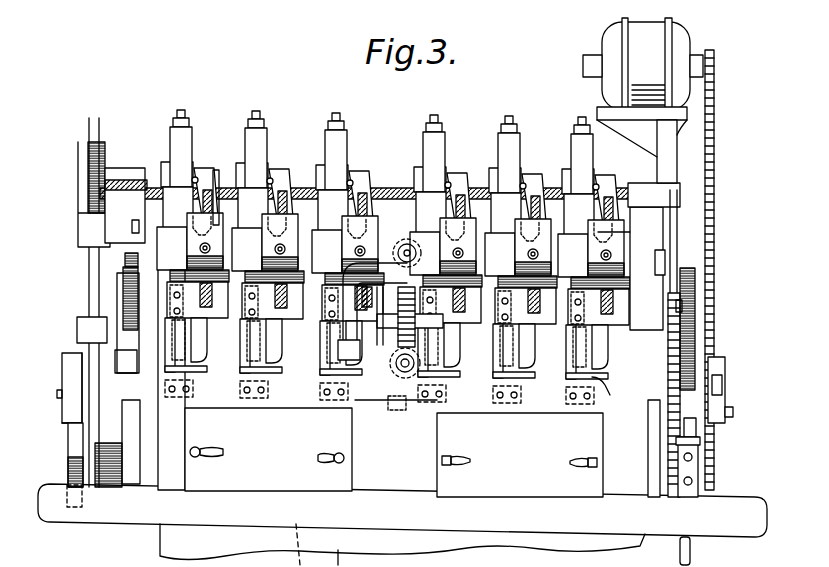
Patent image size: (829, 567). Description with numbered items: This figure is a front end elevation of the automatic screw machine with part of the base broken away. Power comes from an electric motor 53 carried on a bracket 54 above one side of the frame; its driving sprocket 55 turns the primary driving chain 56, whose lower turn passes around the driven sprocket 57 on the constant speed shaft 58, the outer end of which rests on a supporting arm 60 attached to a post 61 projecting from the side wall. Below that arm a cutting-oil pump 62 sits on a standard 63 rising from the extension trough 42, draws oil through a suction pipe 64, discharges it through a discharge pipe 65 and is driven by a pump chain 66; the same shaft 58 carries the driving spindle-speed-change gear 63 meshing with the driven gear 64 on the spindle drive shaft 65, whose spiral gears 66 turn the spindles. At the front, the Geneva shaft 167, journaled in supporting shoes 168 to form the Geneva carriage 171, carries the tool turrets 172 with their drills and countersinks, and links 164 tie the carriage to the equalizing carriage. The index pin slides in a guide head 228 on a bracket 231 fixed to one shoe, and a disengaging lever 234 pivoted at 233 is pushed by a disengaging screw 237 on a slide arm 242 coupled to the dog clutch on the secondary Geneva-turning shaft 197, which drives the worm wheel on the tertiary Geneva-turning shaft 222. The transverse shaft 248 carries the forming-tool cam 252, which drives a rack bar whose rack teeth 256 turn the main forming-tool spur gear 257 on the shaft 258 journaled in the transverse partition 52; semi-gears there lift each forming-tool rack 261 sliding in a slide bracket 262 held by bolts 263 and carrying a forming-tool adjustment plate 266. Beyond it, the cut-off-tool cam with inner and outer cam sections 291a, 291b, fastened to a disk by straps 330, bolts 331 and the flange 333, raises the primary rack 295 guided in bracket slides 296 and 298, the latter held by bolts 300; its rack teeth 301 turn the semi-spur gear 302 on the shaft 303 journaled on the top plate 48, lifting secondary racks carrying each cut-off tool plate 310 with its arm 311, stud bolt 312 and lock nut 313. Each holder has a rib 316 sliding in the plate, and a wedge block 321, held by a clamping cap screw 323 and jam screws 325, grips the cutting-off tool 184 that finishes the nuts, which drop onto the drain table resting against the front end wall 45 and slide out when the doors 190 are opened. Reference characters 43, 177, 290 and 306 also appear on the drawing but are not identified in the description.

The extension trough 42 is at (78, 522).
The base plate 43 is at (38, 494).
The front end wall 45 is at (392, 475).
The top plate 48 is at (395, 215).
The transverse partition 52 is at (283, 400).
The electric motor 53 is at (645, 30).
The bracket 54 is at (680, 140).
The driving sprocket 55 is at (713, 54).
The primary driving chain 56 is at (715, 101).
The driven sprocket 57 is at (700, 432).
The constant speed shaft 58 is at (724, 368).
The supporting arm 60 is at (726, 384).
The post 61 is at (733, 412).
The liquid pump 62 is at (699, 478).
The driving spindle-speed-change gear 63 is at (692, 356).
The driven spindle-speed-change gear 64 is at (694, 277).
The spindle drive shaft 65 is at (686, 302).
The pump chain 66 is at (668, 428).
The links 164 is at (226, 331).
The Geneva shaft 167 is at (660, 258).
The supporting shoes 168 is at (320, 230).
The Geneva carriage 171 is at (640, 232).
The tool turrets 172 is at (635, 222).
The spindle 177 is at (610, 190).
The cutting-off tools 184 is at (357, 178).
The doors 190 is at (520, 455).
The secondary Geneva-turning shaft 197 is at (394, 457).
The tertiary Geneva-turning shaft 222 is at (468, 396).
The guide head 228 is at (408, 238).
The bracket 231 is at (383, 215).
The pivot 233 is at (342, 332).
The disengaging lever 234 is at (345, 397).
The disengaging screw 237 is at (338, 356).
The slide arm 242 is at (368, 412).
The transverse shaft 248 is at (135, 428).
The forming-tool cam 252 is at (108, 486).
The rack teeth 256 is at (124, 262).
The main forming-tool spur gear 257 is at (123, 298).
The transverse shaft 258 is at (123, 308).
The forming-tool rack 261 is at (602, 380).
The slide bracket 262 is at (235, 397).
The bolts 263 is at (263, 397).
The forming-tool adjustment plate 266 is at (545, 397).
The shaft 290 is at (110, 488).
The inner cam section 291a is at (70, 440).
The outer cam section 291b is at (62, 360).
The primary rack 295 is at (90, 276).
The bracket slide 296 is at (77, 328).
The bracket slide 298 is at (78, 150).
The bolts 300 is at (135, 225).
The rack teeth 301 is at (96, 118).
The main semi-spur gear 302 is at (88, 181).
The transverse shaft 303 is at (124, 170).
The spindle post 306 is at (195, 160).
The cut-off tool plate 310 is at (441, 160).
The arm 311 is at (446, 140).
The adjustment stud bolt 312 is at (435, 124).
The upper lock nut 313 is at (441, 126).
The rib 316 is at (586, 210).
The wedge block 321 is at (458, 203).
The clamping cap screw 323 is at (272, 165).
The jam screws 325 is at (220, 170).
The straps 330 is at (88, 492).
The bolts 331 is at (57, 393).
The flange 333 is at (62, 413).